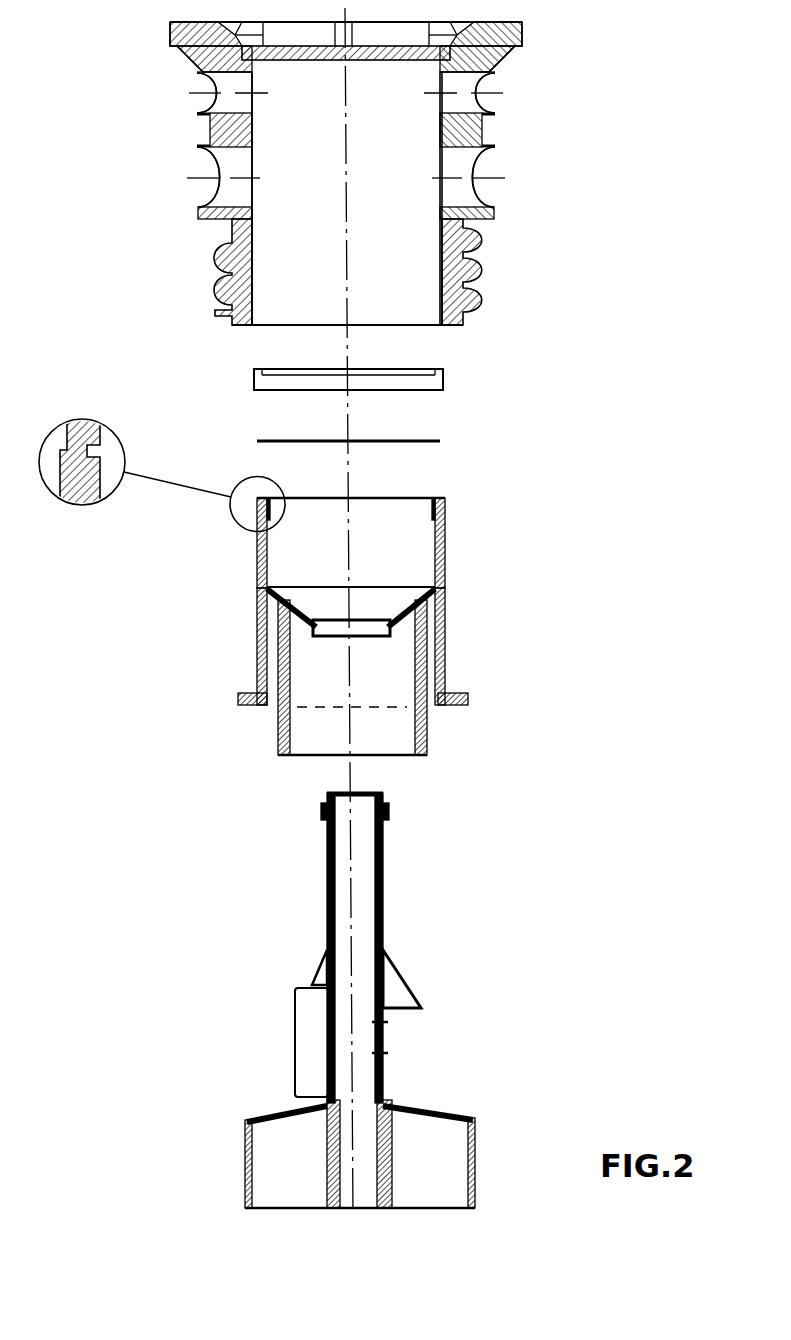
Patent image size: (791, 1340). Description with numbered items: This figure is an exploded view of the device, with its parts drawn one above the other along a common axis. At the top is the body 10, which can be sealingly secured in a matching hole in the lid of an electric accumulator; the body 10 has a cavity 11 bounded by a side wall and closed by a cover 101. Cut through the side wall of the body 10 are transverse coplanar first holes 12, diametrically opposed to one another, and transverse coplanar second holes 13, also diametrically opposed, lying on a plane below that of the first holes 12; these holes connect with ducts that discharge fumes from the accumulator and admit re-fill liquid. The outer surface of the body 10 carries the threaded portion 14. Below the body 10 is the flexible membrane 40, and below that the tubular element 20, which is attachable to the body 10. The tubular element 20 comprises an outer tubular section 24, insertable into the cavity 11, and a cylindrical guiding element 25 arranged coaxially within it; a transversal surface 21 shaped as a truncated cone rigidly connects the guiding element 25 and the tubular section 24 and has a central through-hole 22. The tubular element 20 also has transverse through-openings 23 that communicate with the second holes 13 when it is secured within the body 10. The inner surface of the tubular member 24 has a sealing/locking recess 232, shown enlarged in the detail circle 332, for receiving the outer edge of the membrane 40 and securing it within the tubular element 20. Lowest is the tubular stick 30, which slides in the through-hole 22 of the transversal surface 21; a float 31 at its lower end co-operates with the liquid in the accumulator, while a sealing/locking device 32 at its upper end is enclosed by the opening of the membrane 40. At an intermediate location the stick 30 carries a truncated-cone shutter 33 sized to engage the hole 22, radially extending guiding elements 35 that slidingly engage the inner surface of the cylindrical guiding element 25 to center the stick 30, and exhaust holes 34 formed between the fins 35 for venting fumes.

The body 10 is at (572, 91).
The cover 101 is at (292, 47).
The cavity 11 is at (254, 243).
The first holes 12 is at (217, 93).
The second holes 13 is at (223, 190).
The threads 14 is at (470, 285).
The flexible membrane 40 is at (440, 440).
The notch detail 332 is at (106, 442).
The tubular element 20 is at (468, 511).
The transversal surface 21 is at (283, 607).
The central through-hole 22 is at (323, 637).
The transverse through-openings 23 is at (265, 565).
The outer tubular section 24 is at (255, 660).
The cylindrical guiding element 25 is at (278, 740).
The tubular stick 30 is at (383, 868).
The sealing/locking recess 232 is at (322, 812).
The sealing/locking device 32 is at (399, 796).
The shutter 33 is at (320, 963).
The exhaust holes 34 is at (385, 1052).
The guiding elements 35 is at (308, 1049).
The float 31 is at (437, 1117).